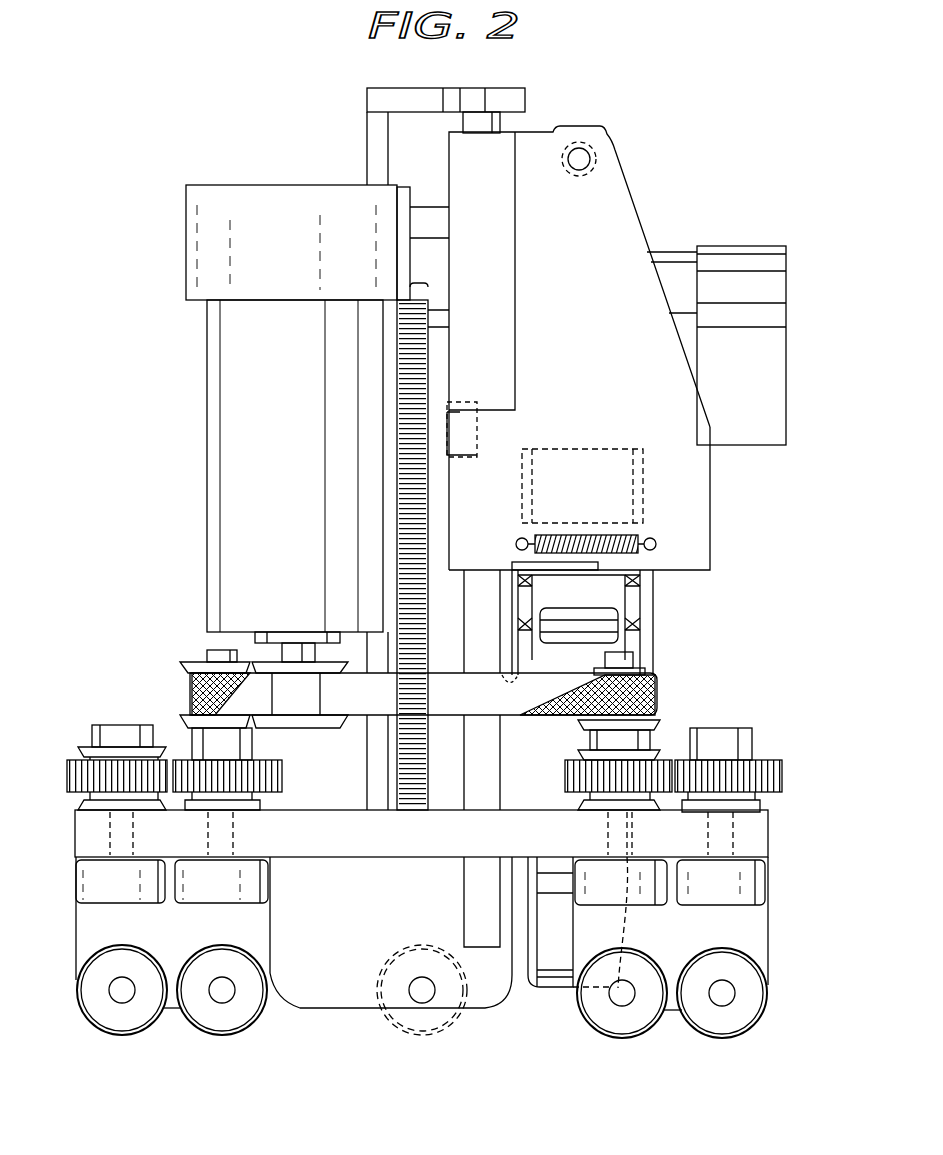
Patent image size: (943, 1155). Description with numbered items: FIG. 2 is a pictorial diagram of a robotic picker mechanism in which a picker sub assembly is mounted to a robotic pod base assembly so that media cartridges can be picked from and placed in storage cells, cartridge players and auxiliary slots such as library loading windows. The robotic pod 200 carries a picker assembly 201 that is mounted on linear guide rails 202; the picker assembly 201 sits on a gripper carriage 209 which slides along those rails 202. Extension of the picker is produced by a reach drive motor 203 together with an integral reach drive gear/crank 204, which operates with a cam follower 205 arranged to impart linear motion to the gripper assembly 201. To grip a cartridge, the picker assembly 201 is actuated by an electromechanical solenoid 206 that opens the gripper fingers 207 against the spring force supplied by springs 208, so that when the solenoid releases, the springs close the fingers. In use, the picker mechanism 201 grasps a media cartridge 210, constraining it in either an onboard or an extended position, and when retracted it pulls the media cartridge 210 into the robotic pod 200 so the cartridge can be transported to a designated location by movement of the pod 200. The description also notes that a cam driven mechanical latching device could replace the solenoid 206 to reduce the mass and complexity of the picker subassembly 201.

The robotic pod 200 is at (273, 128).
The picker assembly 201 is at (750, 531).
The linear guide rails 202 is at (478, 948).
The reach drive motor 203 is at (788, 372).
The reach drive gear/crank 204 is at (404, 418).
The cam follower 205 is at (447, 460).
The electromechanical solenoid 206 is at (592, 478).
The gripper fingers 207 is at (655, 628).
The springs 208 is at (649, 538).
The gripper carriage 209 is at (634, 196).
The media cartridge 210 is at (560, 990).